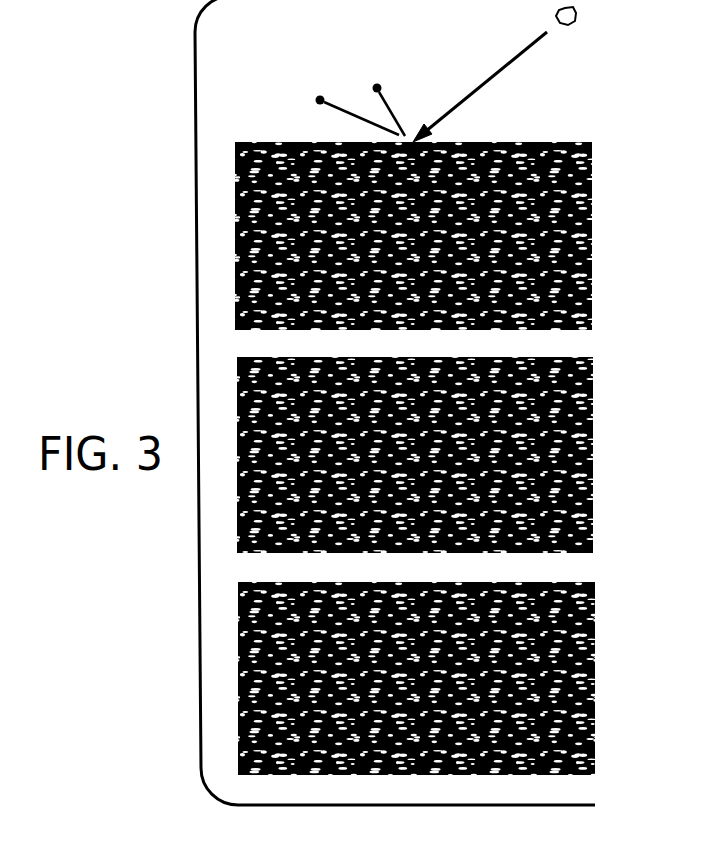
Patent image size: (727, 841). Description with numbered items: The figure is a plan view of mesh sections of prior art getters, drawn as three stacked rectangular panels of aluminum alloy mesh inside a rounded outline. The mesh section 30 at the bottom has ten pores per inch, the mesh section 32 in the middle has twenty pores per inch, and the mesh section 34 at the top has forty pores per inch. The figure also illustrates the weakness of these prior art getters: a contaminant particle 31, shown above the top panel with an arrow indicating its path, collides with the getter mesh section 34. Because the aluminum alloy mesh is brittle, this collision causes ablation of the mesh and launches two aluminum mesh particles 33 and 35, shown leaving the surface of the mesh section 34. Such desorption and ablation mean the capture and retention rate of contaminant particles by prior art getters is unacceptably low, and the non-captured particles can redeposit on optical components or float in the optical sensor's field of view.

The mesh section 30 is at (595, 687).
The particle 31 is at (574, 25).
The mesh section 32 is at (593, 464).
The aluminum mesh particle 33 is at (320, 96).
The mesh section 34 is at (592, 248).
The aluminum mesh particle 35 is at (378, 84).